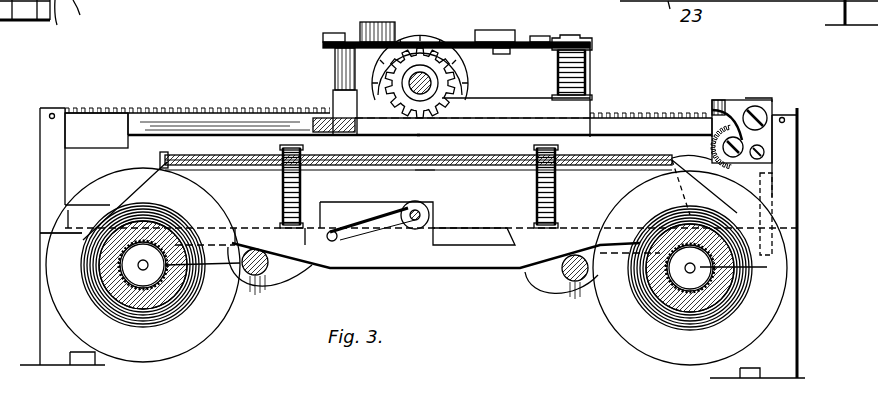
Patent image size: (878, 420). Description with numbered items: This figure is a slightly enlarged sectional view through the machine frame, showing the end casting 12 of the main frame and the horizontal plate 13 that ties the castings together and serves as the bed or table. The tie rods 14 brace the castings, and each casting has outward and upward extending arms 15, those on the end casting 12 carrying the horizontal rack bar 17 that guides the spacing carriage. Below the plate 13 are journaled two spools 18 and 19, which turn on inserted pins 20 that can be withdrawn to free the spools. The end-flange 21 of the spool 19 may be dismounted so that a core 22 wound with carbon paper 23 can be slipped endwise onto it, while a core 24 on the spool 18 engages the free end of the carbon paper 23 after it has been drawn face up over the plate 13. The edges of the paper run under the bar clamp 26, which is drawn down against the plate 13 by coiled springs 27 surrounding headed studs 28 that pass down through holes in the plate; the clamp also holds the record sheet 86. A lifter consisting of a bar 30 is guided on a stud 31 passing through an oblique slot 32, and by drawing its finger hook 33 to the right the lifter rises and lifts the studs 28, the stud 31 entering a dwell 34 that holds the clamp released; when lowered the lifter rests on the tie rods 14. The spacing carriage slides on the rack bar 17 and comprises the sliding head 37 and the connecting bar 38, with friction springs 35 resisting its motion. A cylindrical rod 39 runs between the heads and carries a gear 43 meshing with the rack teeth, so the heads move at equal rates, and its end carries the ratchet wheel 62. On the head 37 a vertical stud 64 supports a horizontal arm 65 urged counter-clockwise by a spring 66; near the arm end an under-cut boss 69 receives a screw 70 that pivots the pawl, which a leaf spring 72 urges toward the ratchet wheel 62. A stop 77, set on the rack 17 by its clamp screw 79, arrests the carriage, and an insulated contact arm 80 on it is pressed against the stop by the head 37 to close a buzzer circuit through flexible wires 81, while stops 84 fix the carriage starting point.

The end casting 12 is at (50, 352).
The horizontal plate 13 is at (497, 165).
The tie rods 14 is at (267, 285).
The arms 15 is at (40, 147).
The rack bar 17 is at (230, 127).
The spool 18 is at (80, 235).
The spool 19 is at (806, 260).
The inserted pins 20 is at (103, 273).
The end-flange 21 is at (38, 24).
The core 22 is at (56, 27).
The carbon paper 23 is at (128, 183).
The core 24 is at (180, 310).
The bar clamp 26 is at (190, 137).
The coiled springs 27 is at (306, 210).
The headed studs 28 is at (280, 195).
The bar 30 is at (400, 273).
The stud 31 is at (430, 214).
The oblique slot 32 is at (372, 232).
The finger hook 33 is at (773, 210).
The dwell 34 is at (320, 273).
The friction springs 35 is at (424, 171).
The sliding head 37 is at (515, 108).
The connecting bar 38 is at (325, 115).
The cylindrical rod 39 is at (408, 80).
The gear 43 is at (463, 83).
The ratchet wheel 62 is at (448, 82).
The vertical stud 64 is at (582, 38).
The horizontal arm 65 is at (532, 40).
The spring 66 is at (585, 72).
The under-cut boss 69 is at (390, 32).
The screw 70 is at (372, 22).
The leaf spring 72 is at (460, 42).
The stop 77 is at (737, 100).
The clamp screw 79 is at (772, 137).
The insulated contact arm 80 is at (712, 106).
The flexible wires 81 is at (692, 156).
The stops 84 is at (85, 130).
The record sheet 86 is at (160, 160).